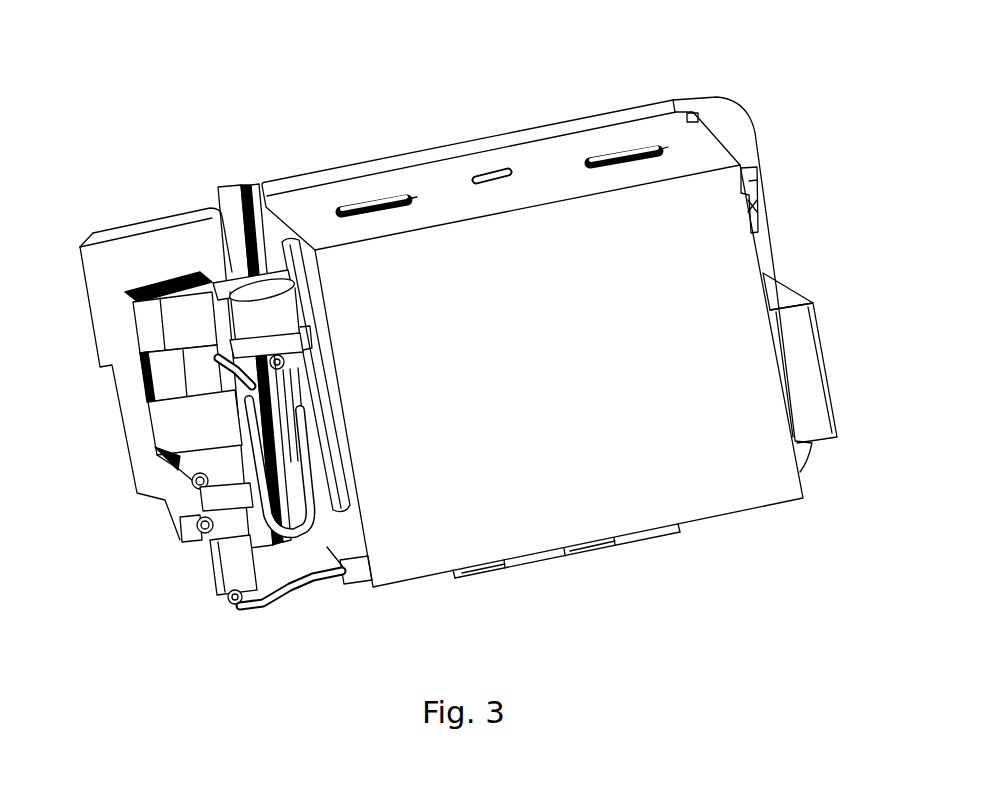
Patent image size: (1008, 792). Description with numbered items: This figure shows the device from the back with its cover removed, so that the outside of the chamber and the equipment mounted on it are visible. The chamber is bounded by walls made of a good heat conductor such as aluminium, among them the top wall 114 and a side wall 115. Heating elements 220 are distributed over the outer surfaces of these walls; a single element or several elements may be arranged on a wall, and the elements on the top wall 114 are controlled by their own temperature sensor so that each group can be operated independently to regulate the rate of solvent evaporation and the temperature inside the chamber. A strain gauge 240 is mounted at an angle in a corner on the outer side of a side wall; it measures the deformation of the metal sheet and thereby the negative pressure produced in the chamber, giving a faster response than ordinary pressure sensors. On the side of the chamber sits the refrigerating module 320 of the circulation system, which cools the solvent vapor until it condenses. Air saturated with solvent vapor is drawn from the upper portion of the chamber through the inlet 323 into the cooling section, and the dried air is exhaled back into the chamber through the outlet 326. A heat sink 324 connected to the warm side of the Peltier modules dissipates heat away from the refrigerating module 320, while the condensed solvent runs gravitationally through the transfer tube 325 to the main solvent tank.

The top wall 114 is at (483, 195).
The side wall 115 is at (730, 330).
The heating elements 220 is at (654, 148).
The strain gauge 240 is at (753, 188).
The refrigerating module 320 is at (143, 262).
The inlet 323 is at (240, 280).
The heat sink 324 is at (203, 452).
The transfer tube 325 is at (192, 486).
The outlet 326 is at (250, 421).